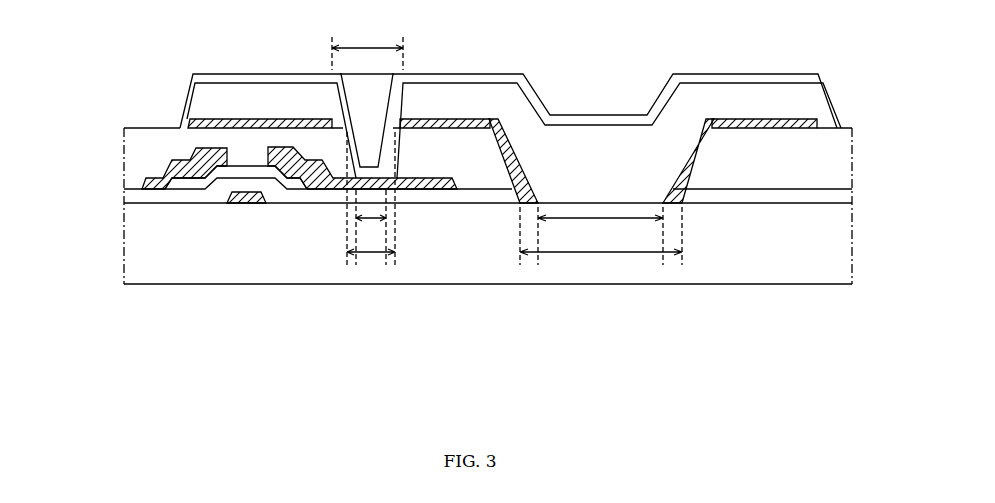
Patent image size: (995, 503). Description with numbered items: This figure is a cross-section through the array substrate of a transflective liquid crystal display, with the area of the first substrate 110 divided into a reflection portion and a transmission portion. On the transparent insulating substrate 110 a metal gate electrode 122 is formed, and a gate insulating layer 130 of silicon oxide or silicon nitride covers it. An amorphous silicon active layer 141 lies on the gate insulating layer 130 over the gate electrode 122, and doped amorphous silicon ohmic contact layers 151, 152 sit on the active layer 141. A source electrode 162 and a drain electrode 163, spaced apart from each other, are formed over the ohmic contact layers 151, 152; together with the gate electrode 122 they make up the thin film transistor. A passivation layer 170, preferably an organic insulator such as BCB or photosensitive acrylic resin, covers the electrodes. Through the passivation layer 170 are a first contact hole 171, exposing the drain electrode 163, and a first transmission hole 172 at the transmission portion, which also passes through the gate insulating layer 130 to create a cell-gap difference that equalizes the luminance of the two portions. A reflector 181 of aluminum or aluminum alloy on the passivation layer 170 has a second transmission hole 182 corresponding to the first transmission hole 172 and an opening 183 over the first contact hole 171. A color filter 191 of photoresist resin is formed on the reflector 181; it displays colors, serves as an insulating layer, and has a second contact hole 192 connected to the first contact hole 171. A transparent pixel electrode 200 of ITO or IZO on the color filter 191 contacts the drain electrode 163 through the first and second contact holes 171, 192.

The first substrate 110 is at (483, 265).
The gate electrode 122 is at (247, 200).
The gate insulating layer 130 is at (433, 195).
The active layer 141 is at (246, 170).
The ohmic contact layer 151 is at (190, 189).
The ohmic contact layer 152 is at (305, 182).
The source electrode 162 is at (198, 148).
The drain electrode 163 is at (294, 150).
The passivation layer 170 is at (140, 160).
The first contact hole 171 is at (371, 227).
The first transmission hole 172 is at (601, 241).
The reflector 181 is at (223, 117).
The second transmission hole 182 is at (600, 236).
The opening 183 is at (367, 47).
The color filter 191 is at (257, 93).
The second contact hole 192 is at (371, 205).
The pixel electrode 200 is at (697, 74).